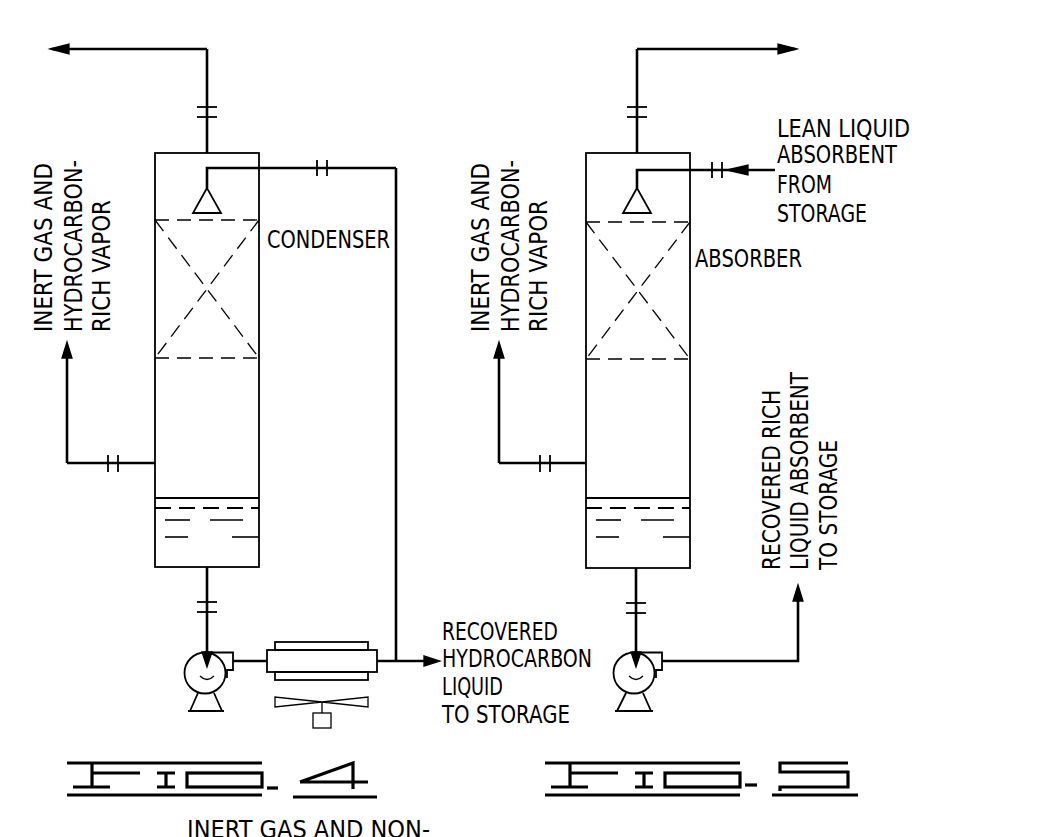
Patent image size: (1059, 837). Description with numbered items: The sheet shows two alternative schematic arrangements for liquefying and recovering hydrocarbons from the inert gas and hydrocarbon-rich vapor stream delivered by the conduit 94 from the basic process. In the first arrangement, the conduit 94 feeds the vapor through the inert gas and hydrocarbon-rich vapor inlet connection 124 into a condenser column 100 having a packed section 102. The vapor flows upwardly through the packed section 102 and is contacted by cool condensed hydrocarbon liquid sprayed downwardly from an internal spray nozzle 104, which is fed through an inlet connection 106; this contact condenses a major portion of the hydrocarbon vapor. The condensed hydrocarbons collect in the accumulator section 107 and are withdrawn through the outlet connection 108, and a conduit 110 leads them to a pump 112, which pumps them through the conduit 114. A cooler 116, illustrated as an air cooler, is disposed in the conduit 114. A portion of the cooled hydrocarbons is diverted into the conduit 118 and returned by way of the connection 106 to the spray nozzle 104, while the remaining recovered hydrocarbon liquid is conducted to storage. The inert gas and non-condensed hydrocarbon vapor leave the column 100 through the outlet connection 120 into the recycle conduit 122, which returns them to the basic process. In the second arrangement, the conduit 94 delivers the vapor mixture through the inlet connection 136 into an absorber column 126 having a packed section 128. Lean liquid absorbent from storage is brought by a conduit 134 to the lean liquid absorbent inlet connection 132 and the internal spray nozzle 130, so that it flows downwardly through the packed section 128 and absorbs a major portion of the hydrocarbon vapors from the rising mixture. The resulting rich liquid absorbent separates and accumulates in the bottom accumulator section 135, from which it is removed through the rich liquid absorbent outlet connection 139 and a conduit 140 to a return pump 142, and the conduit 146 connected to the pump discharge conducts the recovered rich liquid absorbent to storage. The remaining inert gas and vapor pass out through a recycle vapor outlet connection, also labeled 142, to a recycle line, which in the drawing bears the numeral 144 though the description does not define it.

In FIG. 4, the conduit 94 is at (92, 467).
In FIG. 5, the conduit 94 is at (499, 427).
In FIG. 4, the condenser column 100 is at (263, 409).
In FIG. 4, the packed section 102 is at (240, 292).
In FIG. 4, the internal spray nozzle 104 is at (199, 205).
In FIG. 4, the inlet connection 106 is at (279, 168).
In FIG. 4, the condensed hydrocarbon liquid accumulator section 107 is at (178, 542).
In FIG. 4, the condensed hydrocarbon liquid outlet connection 108 is at (207, 583).
In FIG. 4, the conduit 110 is at (200, 633).
In FIG. 4, the pump 112 is at (193, 675).
In FIG. 4, the conduit 114 is at (253, 660).
In FIG. 4, the cooler 116 is at (355, 660).
In FIG. 4, the conduit 118 is at (396, 408).
In FIG. 4, the non-condensed hydrocarbon and inert gases outlet connection 120 is at (203, 132).
In FIG. 4, the recycle conduit 122 is at (183, 47).
In FIG. 4, the inert gas and hydrocarbon-rich vapor inlet connection 124 is at (138, 467).
In FIG. 5, the absorber column 126 is at (694, 401).
In FIG. 5, the packed section 128 is at (677, 297).
In FIG. 5, the internal spray nozzle 130 is at (631, 203).
In FIG. 5, the lean liquid absorbent inlet connection 132 is at (702, 178).
In FIG. 5, the conduit 134 is at (763, 170).
In FIG. 5, the rich liquid absorbent accumulator section 135 is at (600, 527).
In FIG. 5, the inert gas and hydrocarbon-rich vapor mixture inlet connection 136 is at (563, 467).
In FIG. 5, the rich liquid absorbent outlet connection 139 is at (636, 585).
In FIG. 5, the conduit 140 is at (636, 632).
In FIG. 5, the return pump 142 is at (637, 133).
In FIG. 5, the absorber recycle line 144 is at (673, 53).
In FIG. 5, the conduit 146 is at (762, 661).